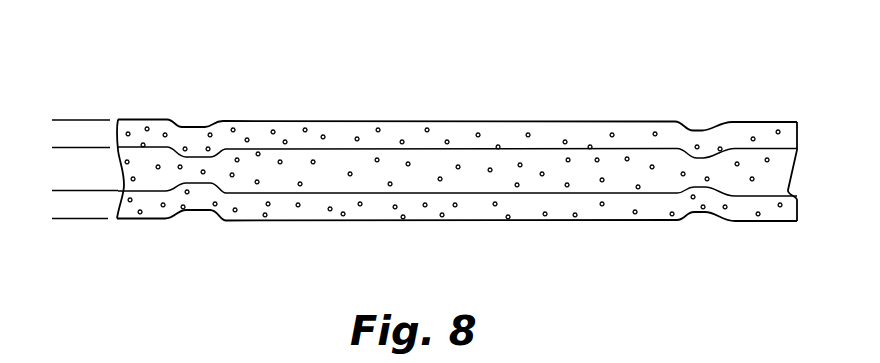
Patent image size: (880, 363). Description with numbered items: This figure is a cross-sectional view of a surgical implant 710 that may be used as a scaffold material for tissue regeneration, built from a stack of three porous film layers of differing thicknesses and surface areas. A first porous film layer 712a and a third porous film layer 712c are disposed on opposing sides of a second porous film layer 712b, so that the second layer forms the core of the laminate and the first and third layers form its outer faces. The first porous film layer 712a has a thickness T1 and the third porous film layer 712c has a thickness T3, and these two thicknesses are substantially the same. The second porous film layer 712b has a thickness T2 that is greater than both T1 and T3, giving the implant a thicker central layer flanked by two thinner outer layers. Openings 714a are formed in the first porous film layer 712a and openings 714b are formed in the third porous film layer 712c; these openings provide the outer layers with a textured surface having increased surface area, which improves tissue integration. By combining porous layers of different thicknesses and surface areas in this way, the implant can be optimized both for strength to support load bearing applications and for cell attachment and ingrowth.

The surgical implant 710 is at (194, 74).
The first porous film layer 712a is at (545, 134).
The second porous film layer 712b is at (619, 176).
The third porous film layer 712c is at (655, 206).
The openings 714a is at (272, 128).
The openings 714b is at (297, 205).
The thickness of first porous film layer T1 is at (50, 130).
The thickness of second porous film layer T2 is at (62, 169).
The thickness of third porous film layer T3 is at (56, 206).